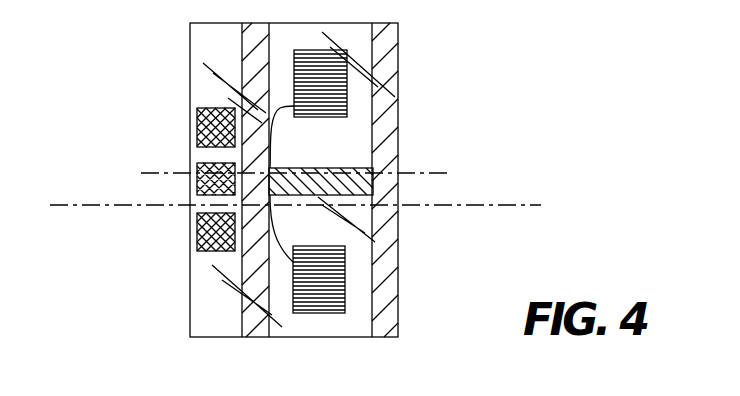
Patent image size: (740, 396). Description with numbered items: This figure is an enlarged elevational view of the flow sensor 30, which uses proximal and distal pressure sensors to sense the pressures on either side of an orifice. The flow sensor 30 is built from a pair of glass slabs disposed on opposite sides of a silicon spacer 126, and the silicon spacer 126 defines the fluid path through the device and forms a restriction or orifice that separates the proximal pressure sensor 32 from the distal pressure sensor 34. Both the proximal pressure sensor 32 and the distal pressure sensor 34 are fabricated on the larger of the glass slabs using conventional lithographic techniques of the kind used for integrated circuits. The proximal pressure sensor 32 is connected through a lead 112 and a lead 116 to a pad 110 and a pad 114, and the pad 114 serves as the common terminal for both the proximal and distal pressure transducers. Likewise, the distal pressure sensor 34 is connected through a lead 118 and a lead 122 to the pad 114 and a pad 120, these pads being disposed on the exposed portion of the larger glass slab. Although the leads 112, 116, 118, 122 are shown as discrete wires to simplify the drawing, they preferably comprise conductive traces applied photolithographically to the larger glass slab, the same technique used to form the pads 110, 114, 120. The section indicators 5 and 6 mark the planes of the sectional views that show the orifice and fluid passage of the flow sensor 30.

The section line 5- 5 is at (141, 170).
The section line 6- 6 is at (50, 203).
The flow sensor 30 is at (112, 318).
The proximal pressure sensor 32 is at (347, 89).
The distal pressure sensor 34 is at (345, 267).
The pad 110 is at (198, 110).
The lead 112 is at (292, 92).
The pad 114 is at (197, 193).
The lead 116 is at (276, 136).
The lead 118 is at (277, 228).
The pad 120 is at (197, 240).
The lead 122 is at (247, 286).
The silicon spacer 126 is at (390, 184).